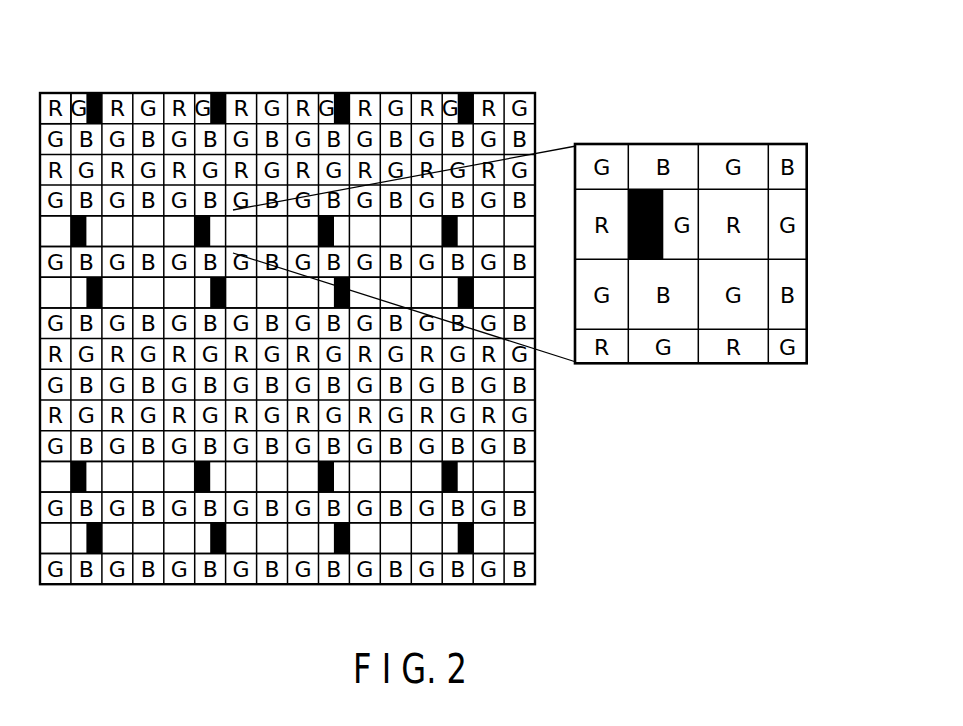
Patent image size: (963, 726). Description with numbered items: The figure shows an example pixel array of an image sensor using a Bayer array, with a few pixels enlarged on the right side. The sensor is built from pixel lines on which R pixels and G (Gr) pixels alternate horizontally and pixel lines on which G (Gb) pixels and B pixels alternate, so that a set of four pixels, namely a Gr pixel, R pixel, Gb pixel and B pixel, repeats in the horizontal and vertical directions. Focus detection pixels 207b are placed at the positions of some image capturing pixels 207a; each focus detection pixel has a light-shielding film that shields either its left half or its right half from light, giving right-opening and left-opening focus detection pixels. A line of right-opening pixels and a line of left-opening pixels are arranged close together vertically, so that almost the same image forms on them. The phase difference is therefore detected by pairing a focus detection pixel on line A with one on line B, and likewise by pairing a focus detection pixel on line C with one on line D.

The image capturing pixel 207a is at (52, 92).
The focus detection pixel 207b is at (97, 92).
The line A is at (275, 231).
The line B is at (275, 292).
The line C is at (275, 476).
The line D is at (275, 538).